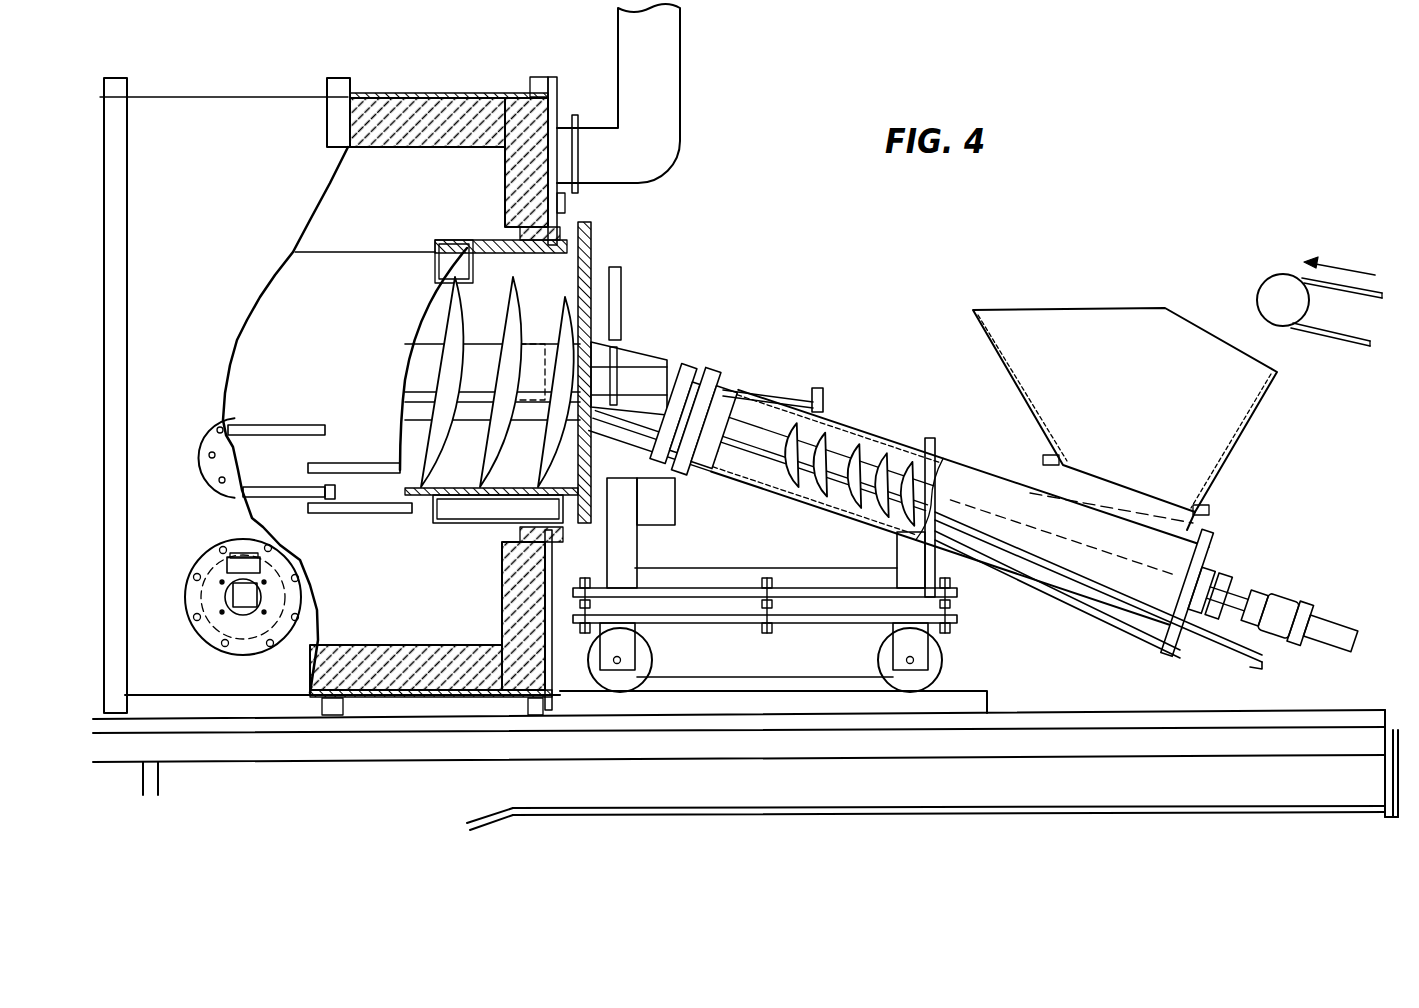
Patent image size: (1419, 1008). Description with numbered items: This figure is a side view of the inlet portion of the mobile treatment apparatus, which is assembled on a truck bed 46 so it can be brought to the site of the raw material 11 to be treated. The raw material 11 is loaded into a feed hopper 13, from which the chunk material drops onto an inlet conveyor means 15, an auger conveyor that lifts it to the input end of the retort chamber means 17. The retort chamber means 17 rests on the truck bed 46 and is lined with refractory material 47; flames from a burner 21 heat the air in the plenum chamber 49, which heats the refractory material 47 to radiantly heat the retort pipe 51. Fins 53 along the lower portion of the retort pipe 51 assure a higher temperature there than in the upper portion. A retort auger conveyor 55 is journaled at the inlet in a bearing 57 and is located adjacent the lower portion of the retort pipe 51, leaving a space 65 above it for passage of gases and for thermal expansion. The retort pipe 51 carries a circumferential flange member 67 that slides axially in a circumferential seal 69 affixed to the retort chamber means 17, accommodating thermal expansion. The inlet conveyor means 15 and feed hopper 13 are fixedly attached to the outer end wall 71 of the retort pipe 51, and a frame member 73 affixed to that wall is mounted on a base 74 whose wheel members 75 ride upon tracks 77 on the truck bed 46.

The raw material 11 is at (1347, 268).
The feed hopper 13 is at (1144, 400).
The inlet conveyor means 15 is at (882, 440).
The retort chamber means 17 is at (445, 95).
The burner 21 is at (236, 588).
The truck bed 46 is at (1333, 740).
The refractory material 47 is at (397, 105).
The plenum chamber 49 is at (474, 190).
The retort pipe 51 is at (358, 268).
The fins 53 is at (328, 437).
The retort auger conveyor 55 is at (462, 325).
The bearing 57 is at (640, 372).
The space 65 is at (530, 262).
The circumferential flange member 67 is at (482, 532).
The circumferential seal 69 is at (630, 542).
The outer end wall 71 is at (596, 243).
The frame member 73 is at (806, 582).
The base 74 is at (866, 605).
The wheel members 75 is at (650, 657).
The tracks 77 is at (985, 692).